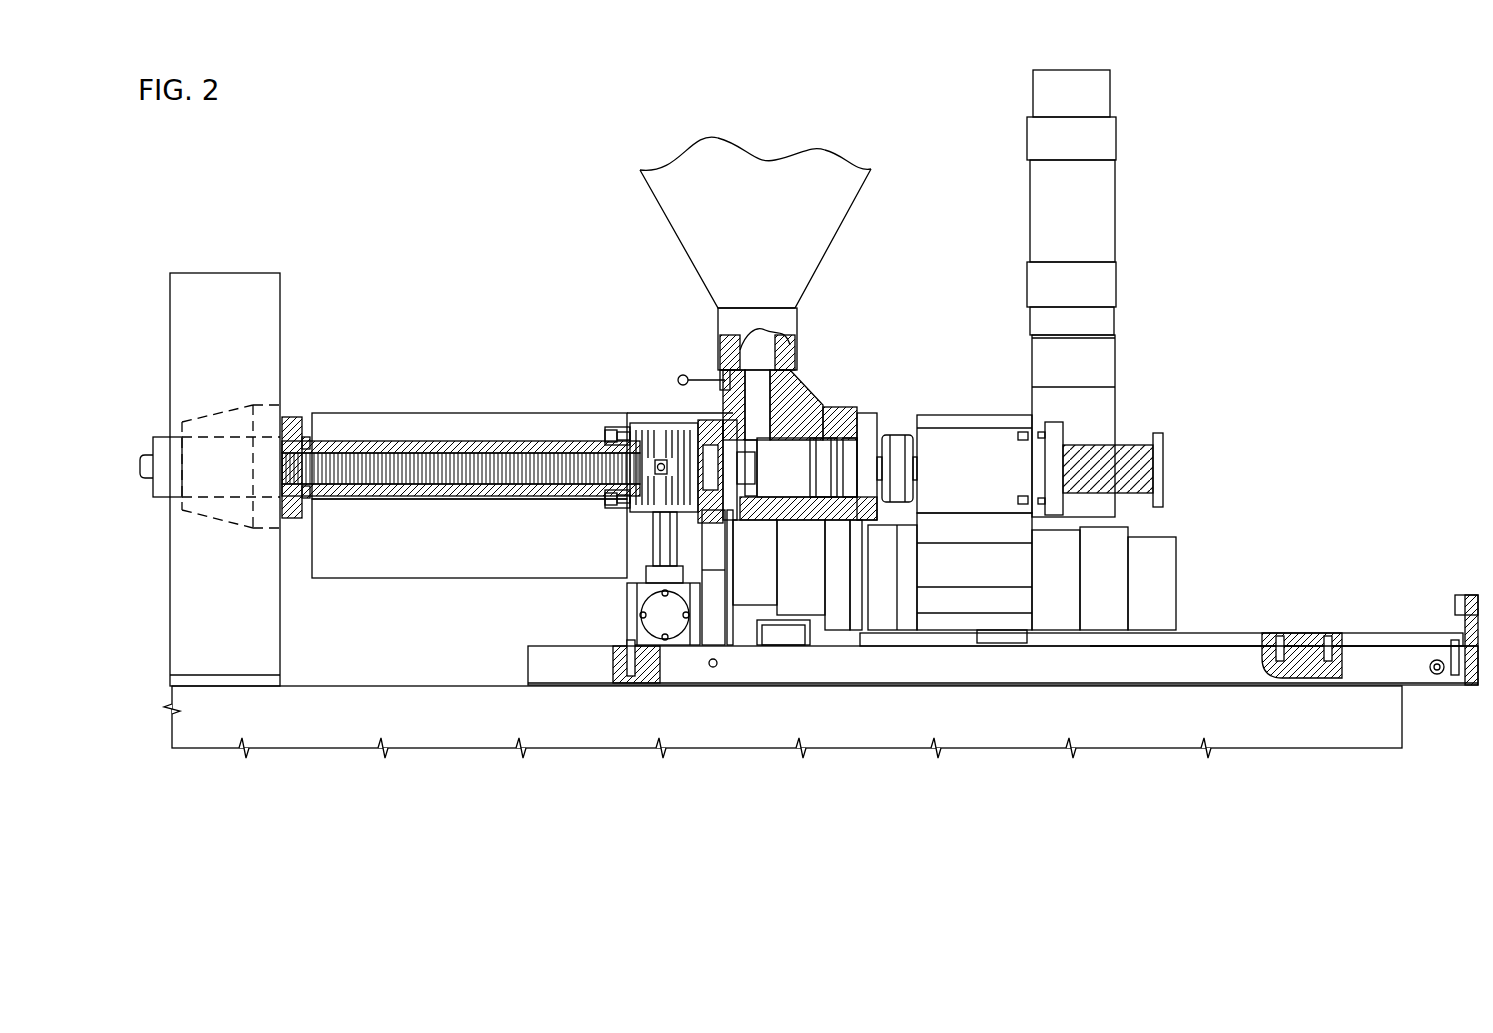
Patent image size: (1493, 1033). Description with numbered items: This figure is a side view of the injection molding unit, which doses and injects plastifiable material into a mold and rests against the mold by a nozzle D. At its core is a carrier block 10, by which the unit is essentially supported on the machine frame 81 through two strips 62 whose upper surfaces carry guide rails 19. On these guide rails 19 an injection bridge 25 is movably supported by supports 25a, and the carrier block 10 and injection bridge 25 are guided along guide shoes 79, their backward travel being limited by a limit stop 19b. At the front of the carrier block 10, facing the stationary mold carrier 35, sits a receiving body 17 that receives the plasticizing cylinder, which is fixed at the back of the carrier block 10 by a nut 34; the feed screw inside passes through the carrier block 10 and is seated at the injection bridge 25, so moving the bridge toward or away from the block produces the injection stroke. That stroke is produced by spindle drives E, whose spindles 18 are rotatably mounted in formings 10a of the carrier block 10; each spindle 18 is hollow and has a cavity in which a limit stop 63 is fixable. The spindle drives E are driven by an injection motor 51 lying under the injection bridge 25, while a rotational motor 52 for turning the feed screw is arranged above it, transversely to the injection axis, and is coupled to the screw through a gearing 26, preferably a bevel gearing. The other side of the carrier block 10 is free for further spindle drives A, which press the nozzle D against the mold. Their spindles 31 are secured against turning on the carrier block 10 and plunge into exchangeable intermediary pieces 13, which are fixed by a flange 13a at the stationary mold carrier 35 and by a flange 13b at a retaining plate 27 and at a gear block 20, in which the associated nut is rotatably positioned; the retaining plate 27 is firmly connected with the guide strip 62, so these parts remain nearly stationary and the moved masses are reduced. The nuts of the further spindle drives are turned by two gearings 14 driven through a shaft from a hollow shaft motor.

The carrier block 10 is at (810, 440).
The formings of the carrier block 10a is at (863, 425).
The intermediary pieces 13 is at (500, 435).
The flange 13a is at (292, 425).
The flange 13b is at (615, 425).
The gearings 14 is at (625, 646).
The receiving body 17 is at (452, 561).
The spindle 18 is at (1140, 445).
The guide rails 19 is at (1378, 637).
The limit stop 19b is at (1458, 600).
The gear block 20 is at (655, 425).
The injection bridge 25 is at (975, 491).
The supports 25a is at (993, 567).
The gearing 26 is at (1080, 358).
The retaining plate 27 is at (705, 420).
The spindles 31 is at (372, 460).
The nut 34 is at (830, 445).
The stationary mold carrier 35 is at (232, 295).
The injection motor 51 is at (1160, 565).
The rotational motor 52 is at (1078, 213).
The strips 62 is at (1148, 663).
The limit stop 63 is at (1165, 463).
The guide shoes 79 is at (790, 640).
The machine frame 81 is at (1340, 730).
The further spindle drives A is at (605, 330).
The nozzle D is at (150, 448).
The spindle drives E is at (960, 362).